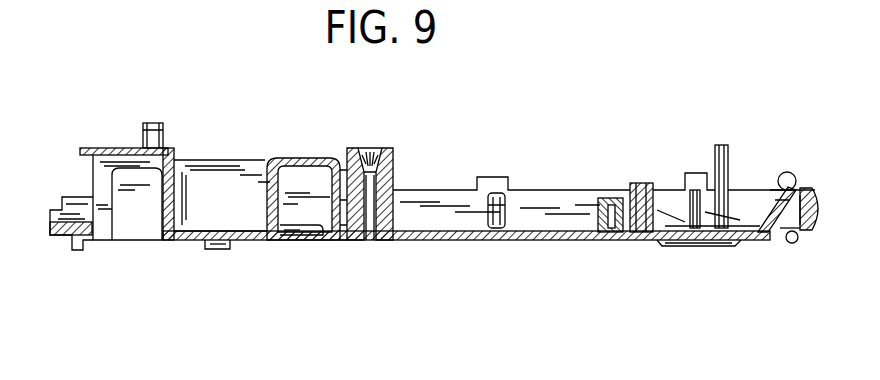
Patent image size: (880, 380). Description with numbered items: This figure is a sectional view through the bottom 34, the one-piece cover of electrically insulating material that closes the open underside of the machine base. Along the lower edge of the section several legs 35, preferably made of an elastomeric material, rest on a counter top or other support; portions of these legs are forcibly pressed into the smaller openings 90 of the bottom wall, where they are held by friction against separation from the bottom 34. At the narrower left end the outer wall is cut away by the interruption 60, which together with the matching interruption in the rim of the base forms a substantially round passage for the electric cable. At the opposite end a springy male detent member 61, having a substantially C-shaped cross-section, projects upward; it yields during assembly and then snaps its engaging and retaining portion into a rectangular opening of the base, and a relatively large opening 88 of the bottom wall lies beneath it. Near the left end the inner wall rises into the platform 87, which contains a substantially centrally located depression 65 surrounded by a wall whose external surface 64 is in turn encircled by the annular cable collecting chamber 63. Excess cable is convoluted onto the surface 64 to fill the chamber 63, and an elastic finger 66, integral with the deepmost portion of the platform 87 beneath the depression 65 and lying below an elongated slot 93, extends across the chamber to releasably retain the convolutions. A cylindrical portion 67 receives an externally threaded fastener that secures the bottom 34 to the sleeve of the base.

The bottom 34 is at (250, 258).
The legs 35 is at (207, 246).
The interruption 60 is at (54, 208).
The male detent members 61 is at (795, 186).
The cable collecting chamber 63 is at (127, 215).
The external surface 64 is at (162, 212).
The depression 65 is at (203, 190).
The fingers 66 is at (291, 238).
The cylindrical portion 67 is at (392, 169).
The platform 87 is at (130, 150).
The openings 88 is at (789, 230).
The openings 90 is at (232, 236).
The elongated slot 93 is at (312, 160).